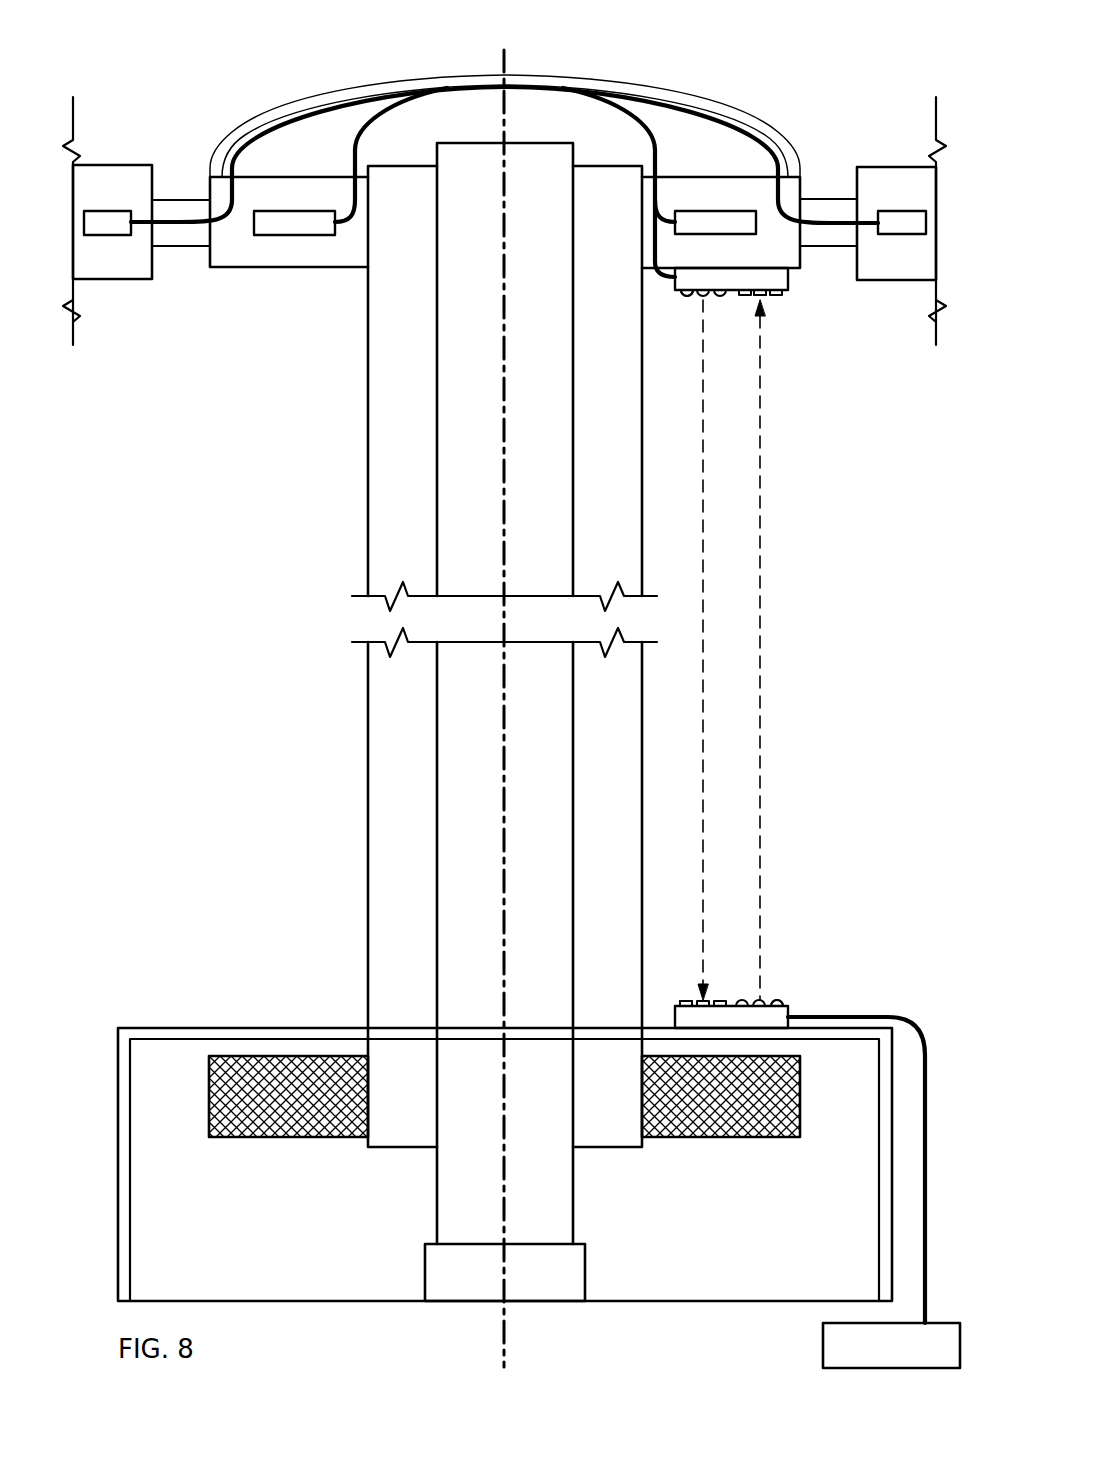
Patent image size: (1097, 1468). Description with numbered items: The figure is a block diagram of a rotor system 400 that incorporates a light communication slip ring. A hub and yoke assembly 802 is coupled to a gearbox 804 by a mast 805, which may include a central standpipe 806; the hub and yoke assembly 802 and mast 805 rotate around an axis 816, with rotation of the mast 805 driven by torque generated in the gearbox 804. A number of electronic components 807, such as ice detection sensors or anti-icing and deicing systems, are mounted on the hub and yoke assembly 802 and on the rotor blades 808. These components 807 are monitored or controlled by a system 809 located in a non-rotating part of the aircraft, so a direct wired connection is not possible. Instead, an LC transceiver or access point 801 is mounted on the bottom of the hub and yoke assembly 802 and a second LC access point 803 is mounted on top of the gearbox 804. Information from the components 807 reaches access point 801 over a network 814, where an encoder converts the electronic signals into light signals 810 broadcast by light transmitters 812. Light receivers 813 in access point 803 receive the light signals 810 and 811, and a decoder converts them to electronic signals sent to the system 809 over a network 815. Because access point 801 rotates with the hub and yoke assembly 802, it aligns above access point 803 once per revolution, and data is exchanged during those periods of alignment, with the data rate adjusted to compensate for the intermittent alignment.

The downhole tool / system 400 is at (183, 77).
The LC transceiver or access point 801 is at (790, 280).
The hub and yoke assembly 802 is at (231, 258).
The LC transceiver or access point 803 is at (790, 1010).
The gearbox 804 is at (118, 1155).
The mast 805 is at (368, 410).
The central standpipe 806 is at (437, 517).
The electronic components 807 is at (107, 237).
The rotor blades 808 is at (112, 165).
The system 809 is at (822, 1345).
The light signals 810 is at (703, 788).
The light signals 811 is at (760, 748).
The light transmitters 812 is at (688, 297).
The light receivers 813 is at (778, 297).
The network 814 is at (345, 97).
The network 815 is at (892, 1017).
The axis 816 is at (500, 1320).